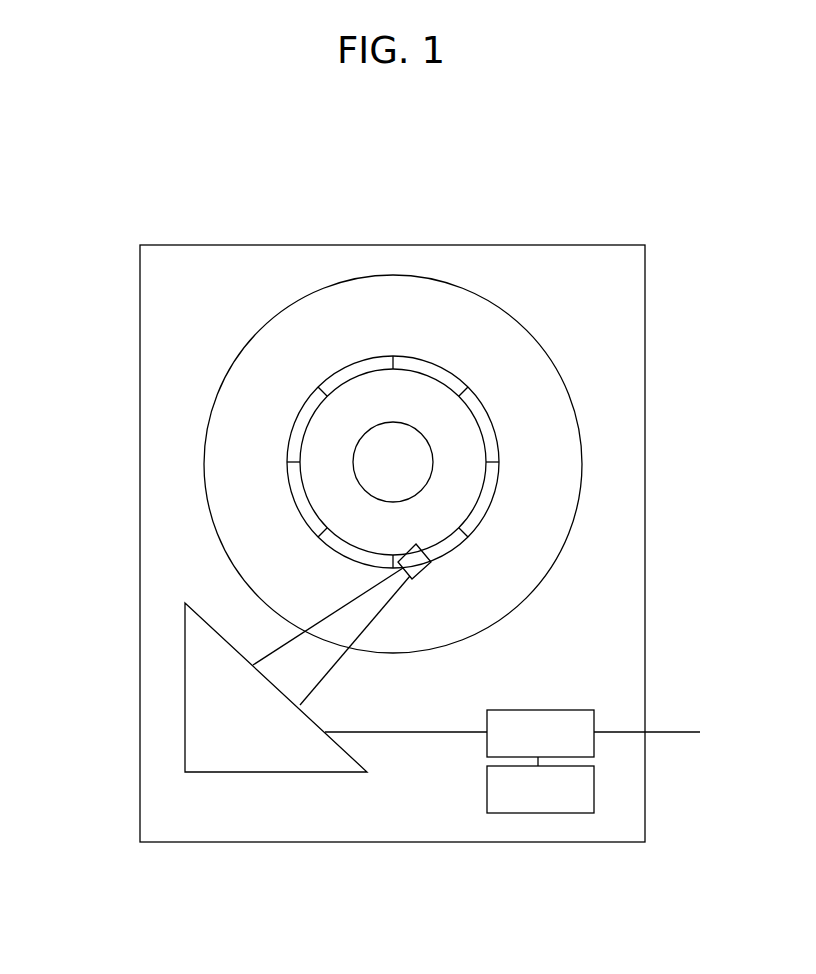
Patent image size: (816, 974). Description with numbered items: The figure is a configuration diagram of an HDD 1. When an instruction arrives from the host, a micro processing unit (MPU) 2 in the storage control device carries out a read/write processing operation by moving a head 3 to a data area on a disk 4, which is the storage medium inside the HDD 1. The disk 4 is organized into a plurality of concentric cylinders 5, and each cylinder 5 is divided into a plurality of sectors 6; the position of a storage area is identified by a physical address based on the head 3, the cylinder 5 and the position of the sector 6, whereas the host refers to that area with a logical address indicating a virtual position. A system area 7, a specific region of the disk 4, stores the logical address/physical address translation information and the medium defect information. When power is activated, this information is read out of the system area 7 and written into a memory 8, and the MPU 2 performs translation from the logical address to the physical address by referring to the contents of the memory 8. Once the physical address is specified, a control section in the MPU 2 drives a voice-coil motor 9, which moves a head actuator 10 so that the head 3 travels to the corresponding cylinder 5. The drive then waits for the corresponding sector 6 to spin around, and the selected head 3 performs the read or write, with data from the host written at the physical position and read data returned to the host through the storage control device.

The HDD 1 is at (558, 245).
The micro processing unit (MPU) 2 is at (575, 710).
The head 3 is at (430, 562).
The disk 4 is at (420, 275).
The cylinder 5 is at (287, 477).
The sector 6 is at (322, 386).
The system area 7 is at (443, 447).
The memory 8 is at (593, 790).
The voice-coil motor 9 is at (185, 665).
The head actuator 10 is at (298, 650).